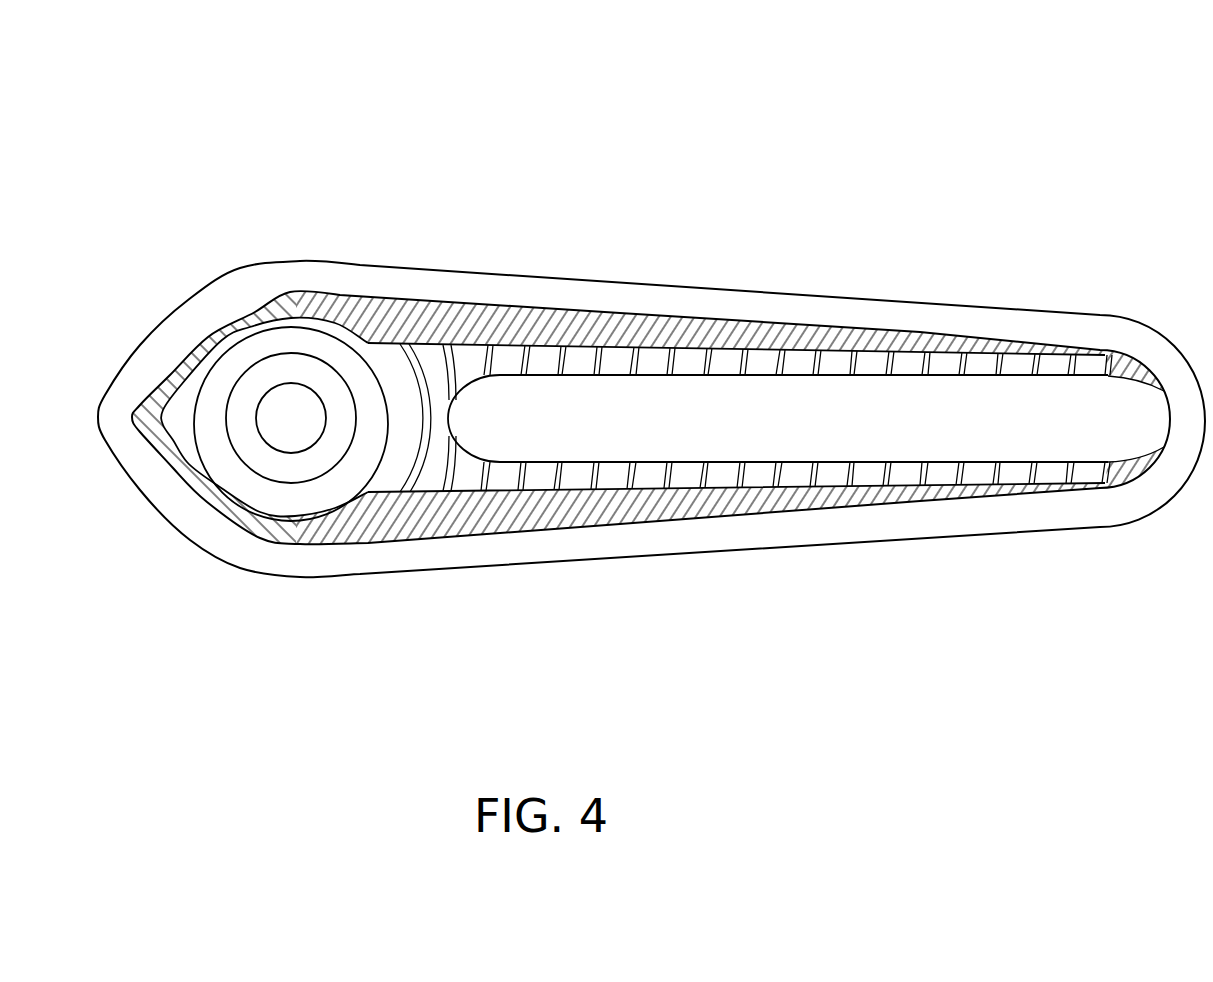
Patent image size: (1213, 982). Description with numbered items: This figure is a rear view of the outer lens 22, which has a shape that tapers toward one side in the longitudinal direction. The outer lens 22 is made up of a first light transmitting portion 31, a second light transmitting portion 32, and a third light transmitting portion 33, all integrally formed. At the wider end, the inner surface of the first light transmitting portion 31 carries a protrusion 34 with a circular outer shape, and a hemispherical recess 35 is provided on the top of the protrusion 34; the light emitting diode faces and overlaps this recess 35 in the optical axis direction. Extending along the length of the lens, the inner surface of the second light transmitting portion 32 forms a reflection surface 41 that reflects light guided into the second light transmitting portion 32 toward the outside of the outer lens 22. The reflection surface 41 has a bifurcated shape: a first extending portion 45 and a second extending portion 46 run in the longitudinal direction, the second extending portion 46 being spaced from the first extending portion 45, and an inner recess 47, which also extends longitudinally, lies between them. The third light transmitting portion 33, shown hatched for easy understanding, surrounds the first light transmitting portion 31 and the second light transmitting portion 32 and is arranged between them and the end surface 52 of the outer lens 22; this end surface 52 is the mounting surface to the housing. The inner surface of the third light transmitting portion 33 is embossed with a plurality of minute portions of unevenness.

The outer lens 22 is at (651, 359).
The first light transmitting portion 31 is at (286, 316).
The second light transmitting portion 32 is at (587, 338).
The third light transmitting portion 33 is at (496, 322).
The protrusion 34 is at (247, 451).
The recess 35 is at (303, 437).
The reflection surface 41 is at (650, 352).
The first extending portion 45 is at (763, 360).
The second extending portion 46 is at (768, 483).
The inner recess 47 is at (880, 406).
The end surface 52 is at (412, 284).